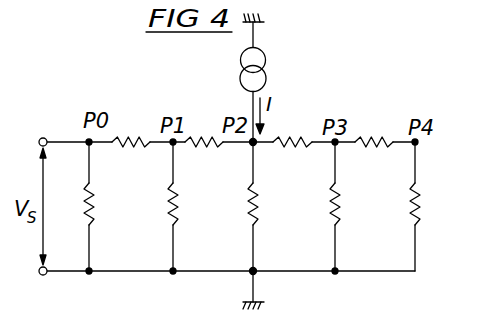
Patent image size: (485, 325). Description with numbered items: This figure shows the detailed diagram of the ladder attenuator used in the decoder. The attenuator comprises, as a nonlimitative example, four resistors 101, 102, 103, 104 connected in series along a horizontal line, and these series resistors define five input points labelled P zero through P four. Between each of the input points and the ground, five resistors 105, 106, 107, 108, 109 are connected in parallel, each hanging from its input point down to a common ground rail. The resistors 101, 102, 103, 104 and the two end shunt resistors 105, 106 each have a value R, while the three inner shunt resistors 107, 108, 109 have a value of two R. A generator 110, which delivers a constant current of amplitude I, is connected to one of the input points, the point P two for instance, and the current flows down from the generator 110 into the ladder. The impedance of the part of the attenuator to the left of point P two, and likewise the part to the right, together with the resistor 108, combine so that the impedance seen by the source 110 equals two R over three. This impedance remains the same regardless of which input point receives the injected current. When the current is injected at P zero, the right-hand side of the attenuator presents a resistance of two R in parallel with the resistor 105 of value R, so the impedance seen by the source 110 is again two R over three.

The series resistor 101 is at (131, 143).
The series resistor 102 is at (204, 143).
The series resistor 103 is at (292, 144).
The series resistor 104 is at (377, 144).
The parallel resistor 105 is at (80, 204).
The parallel resistor 106 is at (405, 204).
The parallel resistor 107 is at (166, 204).
The parallel resistor 108 is at (245, 204).
The parallel resistor 109 is at (329, 204).
The generator 110 is at (268, 95).